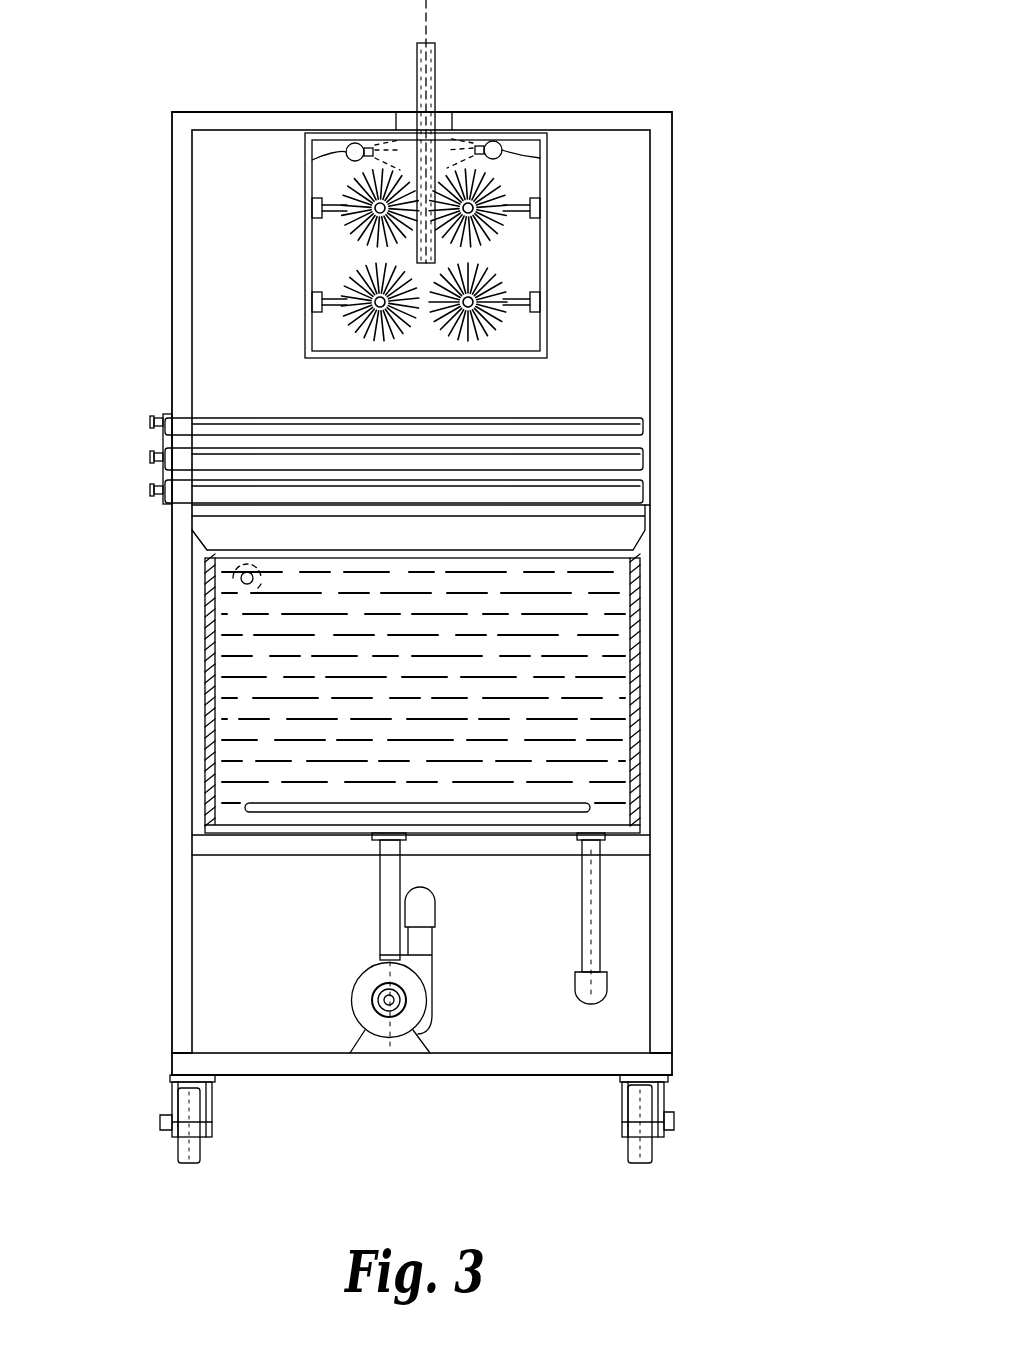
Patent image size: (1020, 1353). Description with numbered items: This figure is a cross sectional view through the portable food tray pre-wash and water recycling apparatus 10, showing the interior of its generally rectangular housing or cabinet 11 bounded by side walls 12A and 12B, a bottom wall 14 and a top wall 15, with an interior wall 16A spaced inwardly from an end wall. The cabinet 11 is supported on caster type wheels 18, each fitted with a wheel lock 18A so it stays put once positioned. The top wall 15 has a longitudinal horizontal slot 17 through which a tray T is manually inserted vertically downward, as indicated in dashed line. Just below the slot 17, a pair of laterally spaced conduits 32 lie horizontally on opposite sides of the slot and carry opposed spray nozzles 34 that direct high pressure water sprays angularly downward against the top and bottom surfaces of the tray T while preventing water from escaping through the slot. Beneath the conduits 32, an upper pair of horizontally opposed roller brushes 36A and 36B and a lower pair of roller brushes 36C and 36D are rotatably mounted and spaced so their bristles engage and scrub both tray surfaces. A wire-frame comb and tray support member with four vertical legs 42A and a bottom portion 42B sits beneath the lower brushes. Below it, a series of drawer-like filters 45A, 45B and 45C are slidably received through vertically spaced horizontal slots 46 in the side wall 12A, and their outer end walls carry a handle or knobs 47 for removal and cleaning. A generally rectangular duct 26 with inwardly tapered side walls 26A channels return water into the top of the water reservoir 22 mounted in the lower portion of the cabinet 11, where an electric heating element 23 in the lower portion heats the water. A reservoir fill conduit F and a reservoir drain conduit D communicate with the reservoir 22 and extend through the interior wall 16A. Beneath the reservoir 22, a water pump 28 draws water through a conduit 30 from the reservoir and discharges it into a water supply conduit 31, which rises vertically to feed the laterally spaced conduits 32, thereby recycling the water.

The portable food tray pre-wash and water recycling apparatus 10 is at (732, 98).
The housing or cabinet 11 is at (170, 262).
The side wall 12A is at (172, 327).
The side wall 12B is at (672, 374).
The bottom wall 14 is at (456, 1078).
The top wall 15 is at (258, 112).
The interior wall 16A is at (628, 392).
The longitudinal horizontal slot 17 is at (397, 128).
The caster type wheels 18 is at (188, 1165).
The wheel lock 18A is at (160, 1125).
The water reservoir 22 is at (205, 685).
The electric heating element 23 is at (400, 805).
The duct 26 is at (207, 550).
The inwardly tapered side walls 26A is at (199, 540).
The water pump 28 is at (351, 1000).
The conduit 30 is at (380, 893).
The water supply conduit 31 is at (434, 940).
The laterally spaced conduits 32 is at (312, 160).
The spray nozzles 34 is at (357, 143).
The roller brush 36A is at (356, 234).
The roller brush 36B is at (492, 240).
The roller brush 36C is at (360, 335).
The roller brush 36D is at (498, 332).
The vertical legs 42A is at (310, 187).
The bottom portion 42B is at (422, 362).
The filter 45A is at (265, 420).
The filter 45B is at (318, 457).
The filter 45C is at (458, 487).
The horizontal slots 46 is at (185, 418).
The handle or knobs 47 is at (150, 490).
The reservoir drain conduit D is at (582, 918).
The reservoir fill conduit F is at (240, 578).
The tray T is at (445, 56).